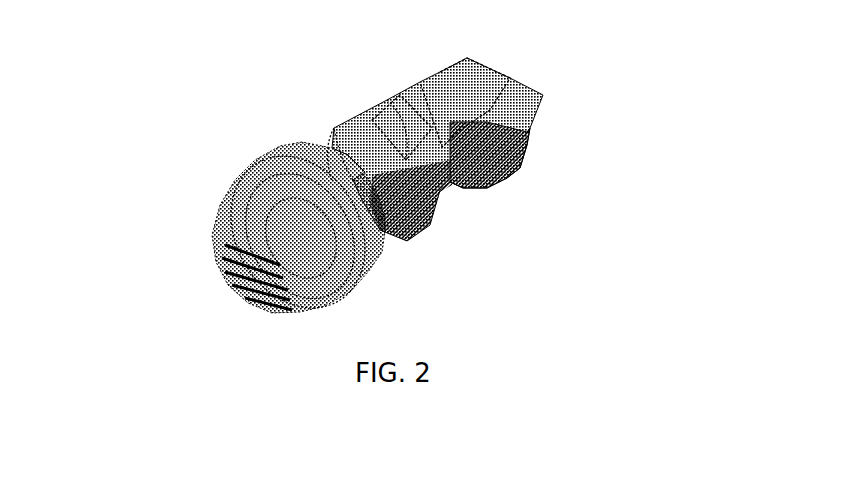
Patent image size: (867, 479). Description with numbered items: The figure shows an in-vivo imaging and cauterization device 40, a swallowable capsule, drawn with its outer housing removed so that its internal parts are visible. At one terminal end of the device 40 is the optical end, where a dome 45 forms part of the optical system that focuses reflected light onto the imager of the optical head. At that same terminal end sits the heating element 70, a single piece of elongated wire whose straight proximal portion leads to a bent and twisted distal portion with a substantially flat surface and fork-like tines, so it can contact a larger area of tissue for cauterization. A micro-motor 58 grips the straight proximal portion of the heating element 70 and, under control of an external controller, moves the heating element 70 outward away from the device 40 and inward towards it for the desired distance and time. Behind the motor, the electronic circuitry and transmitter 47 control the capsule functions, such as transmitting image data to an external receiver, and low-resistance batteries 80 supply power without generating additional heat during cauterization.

The in-vivo imaging and cauterization device 40 is at (513, 235).
The dome 45 is at (300, 303).
The electronic circuitry and transmitter 47 is at (442, 147).
The micro-motor 58 is at (393, 115).
The heating element 70 is at (213, 252).
The batteries 80 is at (510, 164).